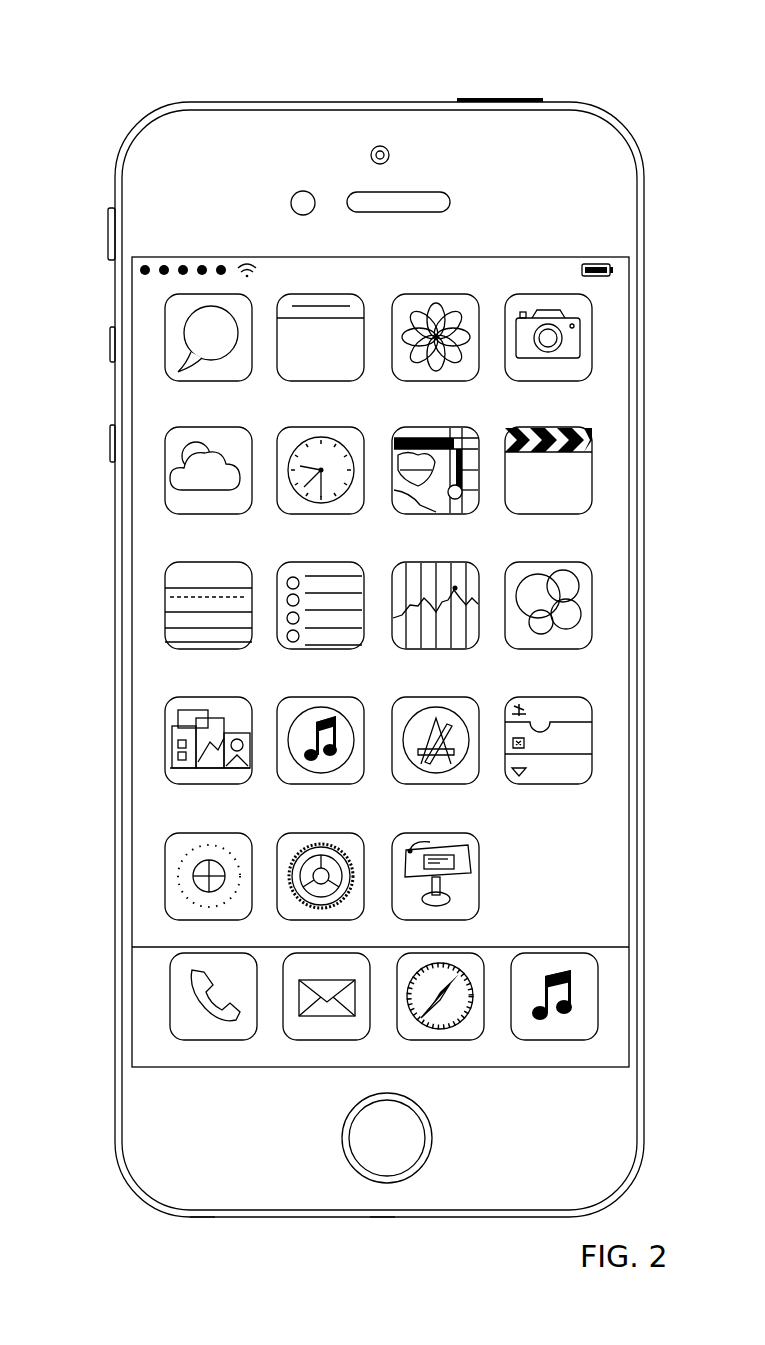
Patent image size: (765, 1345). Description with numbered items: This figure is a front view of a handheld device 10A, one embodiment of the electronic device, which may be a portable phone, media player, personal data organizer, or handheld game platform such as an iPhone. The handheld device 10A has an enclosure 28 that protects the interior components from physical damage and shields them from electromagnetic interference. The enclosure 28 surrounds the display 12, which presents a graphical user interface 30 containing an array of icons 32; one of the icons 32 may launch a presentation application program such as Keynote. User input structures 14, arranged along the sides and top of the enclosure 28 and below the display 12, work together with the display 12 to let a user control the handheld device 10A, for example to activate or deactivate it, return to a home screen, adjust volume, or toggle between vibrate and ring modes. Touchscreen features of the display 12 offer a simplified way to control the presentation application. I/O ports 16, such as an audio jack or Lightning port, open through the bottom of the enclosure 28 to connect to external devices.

The handheld device 10A is at (118, 88).
The display 12 is at (630, 580).
The user input structures 14 is at (518, 98).
The I/O ports 16 is at (203, 1218).
The enclosure 28 is at (643, 208).
The graphical user interface 30 is at (413, 664).
The icons 32 is at (484, 873).